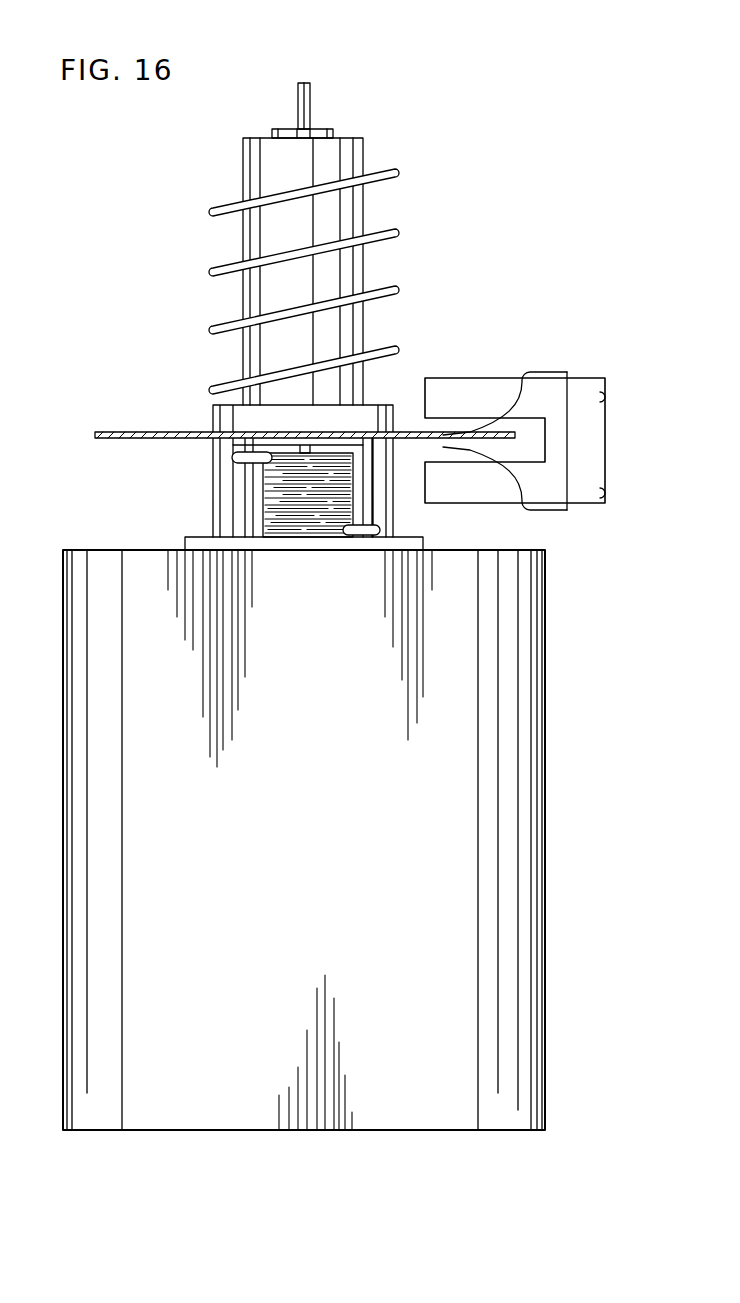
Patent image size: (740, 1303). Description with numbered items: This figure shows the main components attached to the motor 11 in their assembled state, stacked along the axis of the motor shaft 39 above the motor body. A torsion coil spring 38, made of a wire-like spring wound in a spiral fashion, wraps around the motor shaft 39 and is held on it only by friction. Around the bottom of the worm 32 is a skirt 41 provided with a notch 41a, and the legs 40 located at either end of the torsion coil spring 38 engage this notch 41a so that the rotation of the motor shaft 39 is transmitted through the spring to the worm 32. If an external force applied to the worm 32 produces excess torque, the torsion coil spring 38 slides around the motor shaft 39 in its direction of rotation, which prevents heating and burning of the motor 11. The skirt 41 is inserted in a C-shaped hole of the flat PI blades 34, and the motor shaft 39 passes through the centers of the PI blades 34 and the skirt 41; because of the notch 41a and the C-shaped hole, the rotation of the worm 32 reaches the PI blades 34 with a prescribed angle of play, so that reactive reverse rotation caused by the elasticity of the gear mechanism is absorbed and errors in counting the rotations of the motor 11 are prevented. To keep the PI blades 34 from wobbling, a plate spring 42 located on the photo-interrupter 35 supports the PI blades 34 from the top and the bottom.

The motor 11 is at (545, 693).
The worm 32 is at (243, 176).
The PI blades 34 is at (132, 432).
The photo-interrupter 35 is at (607, 441).
The torsion coil spring 38 is at (270, 490).
The motor shaft 39 is at (312, 92).
The legs 40 is at (232, 456).
The skirt 41 is at (213, 410).
The notch 41a is at (227, 525).
The plate spring 42 is at (550, 372).